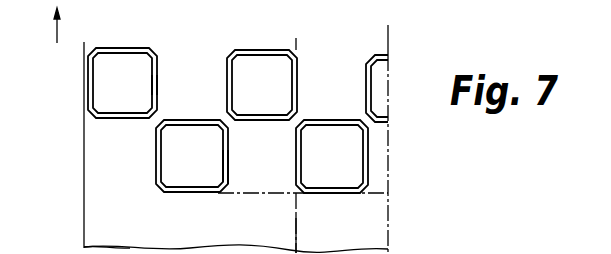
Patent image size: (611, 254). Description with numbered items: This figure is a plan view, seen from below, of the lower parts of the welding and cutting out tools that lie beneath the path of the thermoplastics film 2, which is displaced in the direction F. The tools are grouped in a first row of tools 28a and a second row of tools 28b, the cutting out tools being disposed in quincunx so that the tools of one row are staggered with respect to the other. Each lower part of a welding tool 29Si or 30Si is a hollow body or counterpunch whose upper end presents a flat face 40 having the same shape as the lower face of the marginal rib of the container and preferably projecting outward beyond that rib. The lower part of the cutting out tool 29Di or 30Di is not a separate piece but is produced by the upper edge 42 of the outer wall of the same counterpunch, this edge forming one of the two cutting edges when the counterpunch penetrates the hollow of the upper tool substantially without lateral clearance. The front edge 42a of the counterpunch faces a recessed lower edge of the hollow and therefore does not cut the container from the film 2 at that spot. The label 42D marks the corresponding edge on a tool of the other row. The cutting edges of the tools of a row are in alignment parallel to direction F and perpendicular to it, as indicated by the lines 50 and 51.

The direction of displacement F is at (44, 38).
The thermoplastics film 2 is at (107, 230).
The first row of tools 28a is at (398, 160).
The second row of tools 28b is at (398, 72).
The lower part of welding tool 29Si is at (232, 171).
The lower part of cutting out tool 29Di is at (234, 171).
The lower part of welding tool 30Si is at (161, 80).
The lower part of cutting out tool 30Di is at (166, 84).
The flat face 40 is at (156, 153).
The upper edge of the outer wall of the counterpunch 42 is at (157, 100).
The front edge of the counterpunch 42a is at (95, 121).
The wall 42D is at (330, 120).
The line 50 is at (295, 237).
The line 51 is at (391, 196).